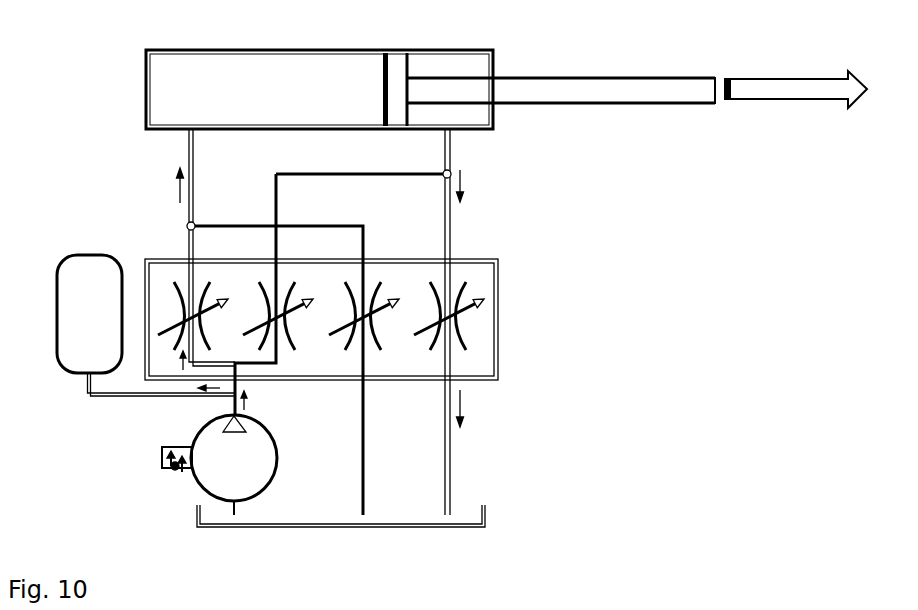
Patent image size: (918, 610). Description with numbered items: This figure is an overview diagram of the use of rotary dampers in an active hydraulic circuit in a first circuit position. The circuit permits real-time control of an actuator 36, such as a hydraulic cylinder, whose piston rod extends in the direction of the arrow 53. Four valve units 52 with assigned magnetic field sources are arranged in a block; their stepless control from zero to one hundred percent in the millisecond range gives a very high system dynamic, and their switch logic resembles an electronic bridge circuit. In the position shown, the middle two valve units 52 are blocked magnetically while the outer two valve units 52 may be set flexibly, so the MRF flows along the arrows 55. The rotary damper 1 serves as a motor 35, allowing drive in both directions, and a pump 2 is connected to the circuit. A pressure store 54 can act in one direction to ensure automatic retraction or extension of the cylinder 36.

The rotary damper 1 is at (387, 329).
The pump 2 is at (196, 486).
The motor 35 is at (162, 465).
The actuator 36 is at (325, 50).
The valve units 52 is at (518, 364).
The arrow 53 is at (817, 85).
The pressure store 54 is at (88, 270).
The arrows 55 is at (175, 196).